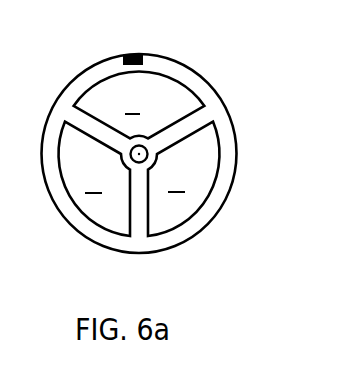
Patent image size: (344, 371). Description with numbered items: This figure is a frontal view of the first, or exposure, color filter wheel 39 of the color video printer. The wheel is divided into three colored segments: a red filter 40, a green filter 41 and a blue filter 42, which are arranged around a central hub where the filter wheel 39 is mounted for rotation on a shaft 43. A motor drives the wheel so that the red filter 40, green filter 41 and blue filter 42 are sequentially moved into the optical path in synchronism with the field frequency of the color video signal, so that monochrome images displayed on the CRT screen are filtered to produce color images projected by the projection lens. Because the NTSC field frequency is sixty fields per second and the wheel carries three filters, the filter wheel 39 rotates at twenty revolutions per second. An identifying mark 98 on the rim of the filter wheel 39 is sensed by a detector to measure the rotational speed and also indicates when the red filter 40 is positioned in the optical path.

The first (exposure) color filter wheel 39 is at (145, 254).
The red filter 40 is at (207, 153).
The green filter 41 is at (95, 206).
The blue filter 42 is at (180, 90).
The shaft 43 is at (143, 155).
The identifying mark 98 is at (136, 54).